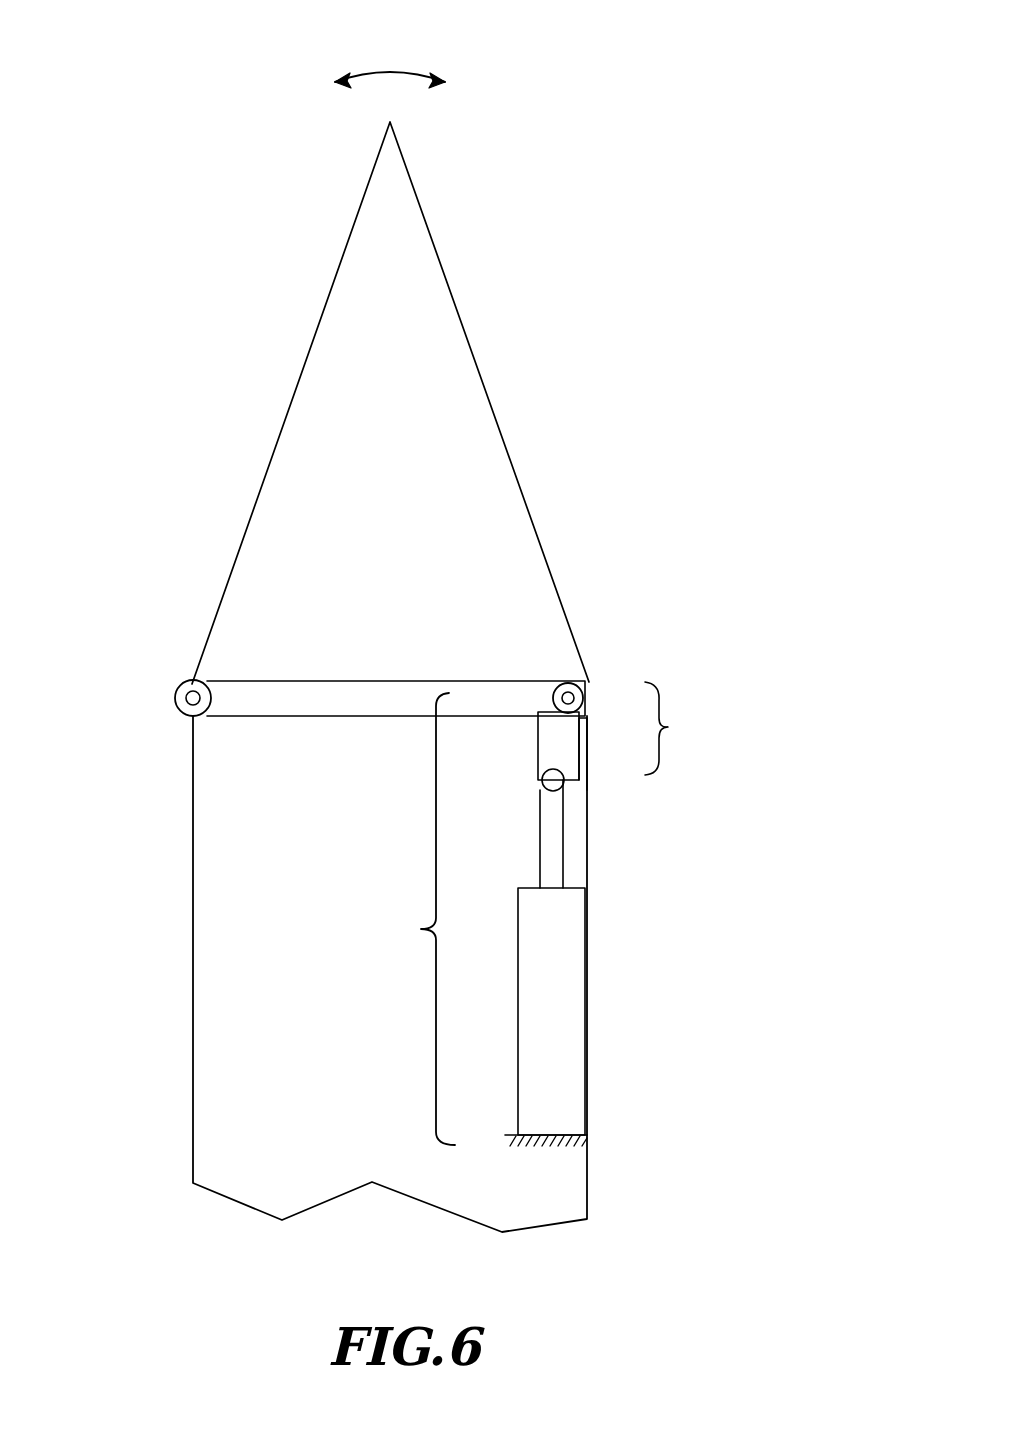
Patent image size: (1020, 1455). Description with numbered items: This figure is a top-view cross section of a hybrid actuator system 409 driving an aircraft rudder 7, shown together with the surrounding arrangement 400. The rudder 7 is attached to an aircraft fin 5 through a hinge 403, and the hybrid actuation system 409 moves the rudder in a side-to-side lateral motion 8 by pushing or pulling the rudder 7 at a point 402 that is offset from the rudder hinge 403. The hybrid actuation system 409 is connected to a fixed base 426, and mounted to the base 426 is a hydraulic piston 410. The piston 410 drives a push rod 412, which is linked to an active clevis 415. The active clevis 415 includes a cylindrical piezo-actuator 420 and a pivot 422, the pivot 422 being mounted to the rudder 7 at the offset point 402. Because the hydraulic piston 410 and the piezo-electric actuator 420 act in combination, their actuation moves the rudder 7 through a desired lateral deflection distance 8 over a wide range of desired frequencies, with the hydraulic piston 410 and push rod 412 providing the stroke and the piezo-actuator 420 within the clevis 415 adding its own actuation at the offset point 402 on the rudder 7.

The lateral motion 8 is at (390, 72).
The aircraft rudder 7 is at (473, 436).
The offset point 402 is at (597, 682).
The rudder hinge 403 is at (175, 701).
The pivot 422 is at (584, 698).
The active clevis 415 is at (683, 728).
The cylindrical piezo-actuator 420 is at (581, 746).
The push rod 412 is at (556, 832).
The hydraulic piston 410 is at (597, 1038).
The fixed base 426 is at (585, 1142).
The hybrid actuator system 409 is at (414, 919).
The aircraft fin 5 is at (268, 1064).
The actuator system 400 is at (705, 1027).